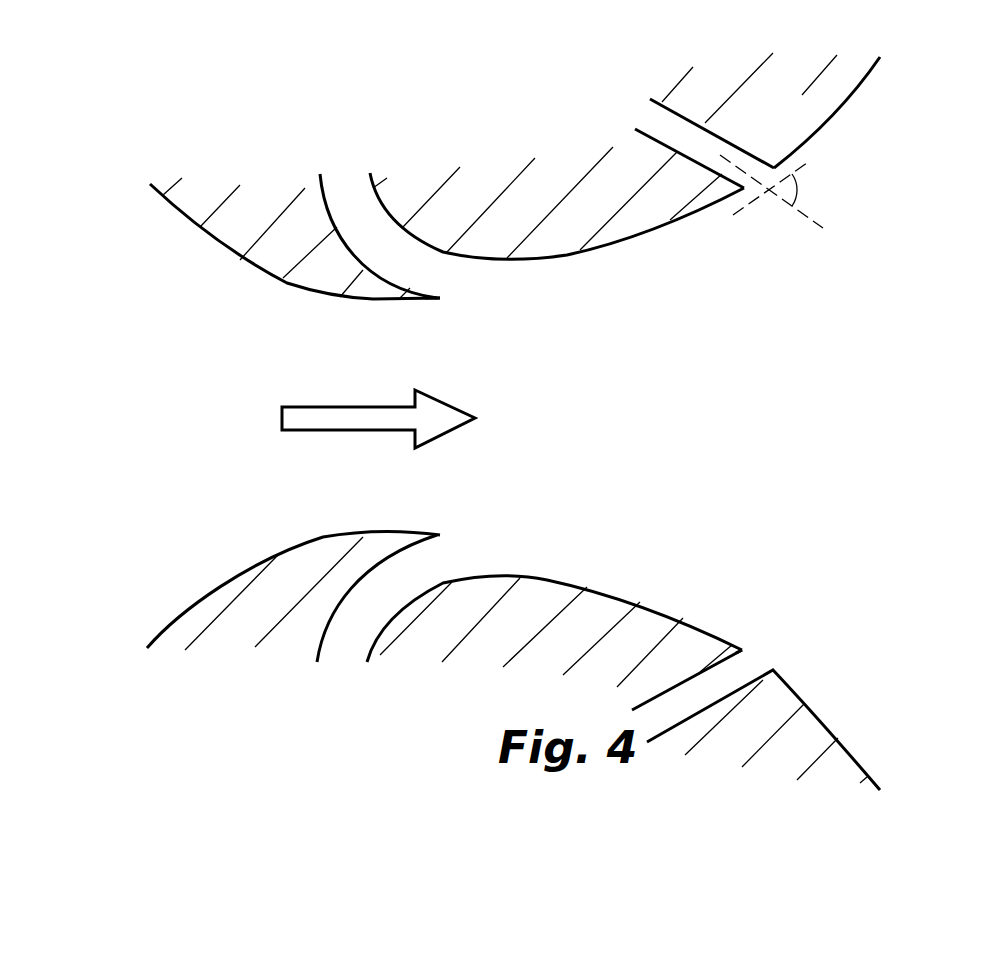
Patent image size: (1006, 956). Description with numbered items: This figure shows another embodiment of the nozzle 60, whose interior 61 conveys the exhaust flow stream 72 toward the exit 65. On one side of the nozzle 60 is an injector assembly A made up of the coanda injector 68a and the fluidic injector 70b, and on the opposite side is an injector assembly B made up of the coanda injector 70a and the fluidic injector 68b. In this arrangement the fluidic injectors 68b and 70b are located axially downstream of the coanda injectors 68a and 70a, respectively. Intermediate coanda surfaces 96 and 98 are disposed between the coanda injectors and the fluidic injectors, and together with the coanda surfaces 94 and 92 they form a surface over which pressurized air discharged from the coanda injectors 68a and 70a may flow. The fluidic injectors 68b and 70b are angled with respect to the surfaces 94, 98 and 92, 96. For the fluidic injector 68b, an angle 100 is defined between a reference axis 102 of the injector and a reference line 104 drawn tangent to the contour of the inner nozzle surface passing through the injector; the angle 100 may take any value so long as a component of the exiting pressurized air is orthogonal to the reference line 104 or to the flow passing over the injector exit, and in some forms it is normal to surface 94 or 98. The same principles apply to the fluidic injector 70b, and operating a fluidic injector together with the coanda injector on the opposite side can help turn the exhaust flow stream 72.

The nozzle 60 is at (222, 252).
The interior 61 is at (214, 460).
The exit 65 is at (960, 347).
The coanda injector 68a is at (427, 560).
The fluidic injector 68b is at (745, 168).
The coanda injector 70a is at (427, 273).
The fluidic injector 70b is at (748, 668).
The exhaust flow stream 72 is at (353, 407).
The coanda surface 92 is at (835, 725).
The coanda surface 94 is at (847, 107).
The intermediate coanda surface 96 is at (577, 583).
The intermediate coanda surface 98 is at (567, 257).
The angle 100 is at (800, 187).
The reference axis 102 is at (812, 220).
The reference line 104 is at (757, 203).
The injector assembly A is at (693, 520).
The injector assembly B is at (692, 307).